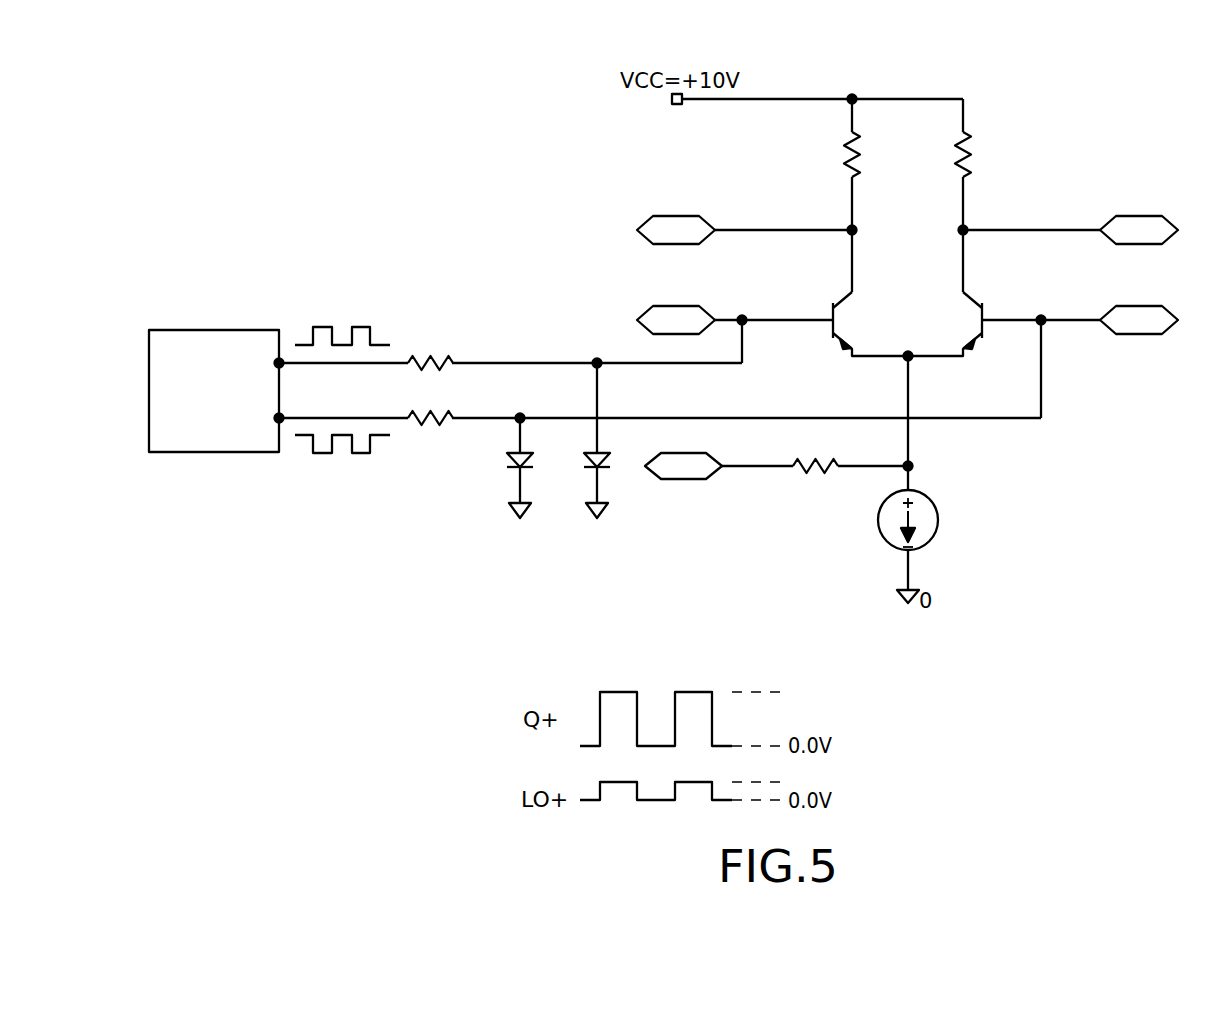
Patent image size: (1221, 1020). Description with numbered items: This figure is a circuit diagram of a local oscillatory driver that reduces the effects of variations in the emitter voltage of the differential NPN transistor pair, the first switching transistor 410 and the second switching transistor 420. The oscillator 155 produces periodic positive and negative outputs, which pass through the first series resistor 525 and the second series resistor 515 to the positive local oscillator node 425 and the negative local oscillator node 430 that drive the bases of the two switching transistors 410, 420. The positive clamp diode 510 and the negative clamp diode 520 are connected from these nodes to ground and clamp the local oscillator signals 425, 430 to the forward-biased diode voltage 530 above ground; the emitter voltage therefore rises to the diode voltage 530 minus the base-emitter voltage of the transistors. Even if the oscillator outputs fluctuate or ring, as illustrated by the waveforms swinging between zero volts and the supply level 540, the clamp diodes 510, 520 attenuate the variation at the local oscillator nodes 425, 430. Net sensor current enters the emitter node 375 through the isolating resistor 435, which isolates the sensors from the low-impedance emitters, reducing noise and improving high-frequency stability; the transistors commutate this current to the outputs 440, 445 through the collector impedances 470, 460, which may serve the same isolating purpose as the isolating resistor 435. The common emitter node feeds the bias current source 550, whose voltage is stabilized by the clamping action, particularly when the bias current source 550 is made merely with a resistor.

The oscillator 155 is at (230, 453).
The N1 375 is at (716, 472).
The QswP 410 is at (858, 318).
The QswN 420 is at (988, 340).
The LO+ 425 is at (703, 306).
The LO− 430 is at (1112, 335).
The resistor Rns 435 is at (796, 470).
The IF+ 440 is at (703, 216).
The IF− 445 is at (1112, 245).
The arbitrary impedance 460 is at (975, 152).
The arbitrary impedance 470 is at (846, 136).
The diode D+ 510 is at (500, 467).
The resistor RLO 515 is at (416, 424).
The diode D− 520 is at (612, 468).
The resistor RLO 525 is at (455, 363).
The VD 530 is at (824, 769).
The voltage level VDD 540 is at (842, 678).
The bias current source Ibias 550 is at (937, 510).